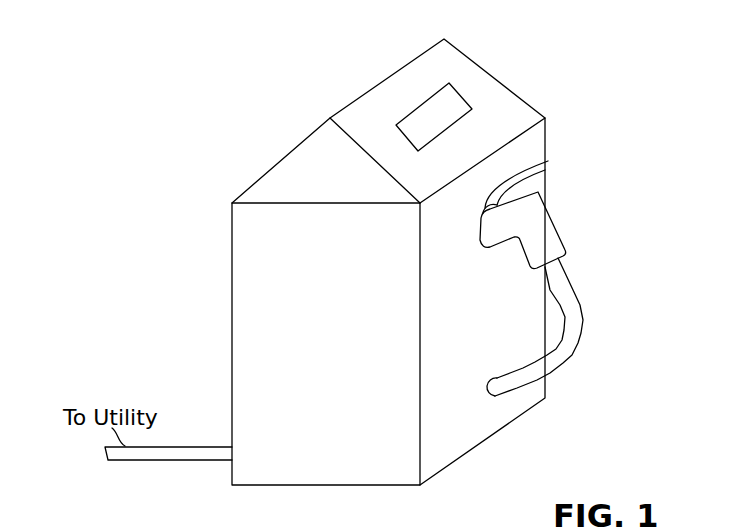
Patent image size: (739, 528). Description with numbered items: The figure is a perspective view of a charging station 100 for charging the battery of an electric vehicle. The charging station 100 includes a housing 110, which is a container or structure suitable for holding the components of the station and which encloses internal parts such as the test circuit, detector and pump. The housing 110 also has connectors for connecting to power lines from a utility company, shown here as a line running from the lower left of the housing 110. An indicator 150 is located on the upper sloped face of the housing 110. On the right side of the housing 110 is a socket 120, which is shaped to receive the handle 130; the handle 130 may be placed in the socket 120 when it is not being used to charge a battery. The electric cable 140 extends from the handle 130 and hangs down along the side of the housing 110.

The charging station 100 is at (186, 103).
The housing 110 is at (232, 293).
The socket 120 is at (548, 161).
The handle 130 is at (557, 227).
The electric cable 140 is at (577, 303).
The indicator 150 is at (467, 100).